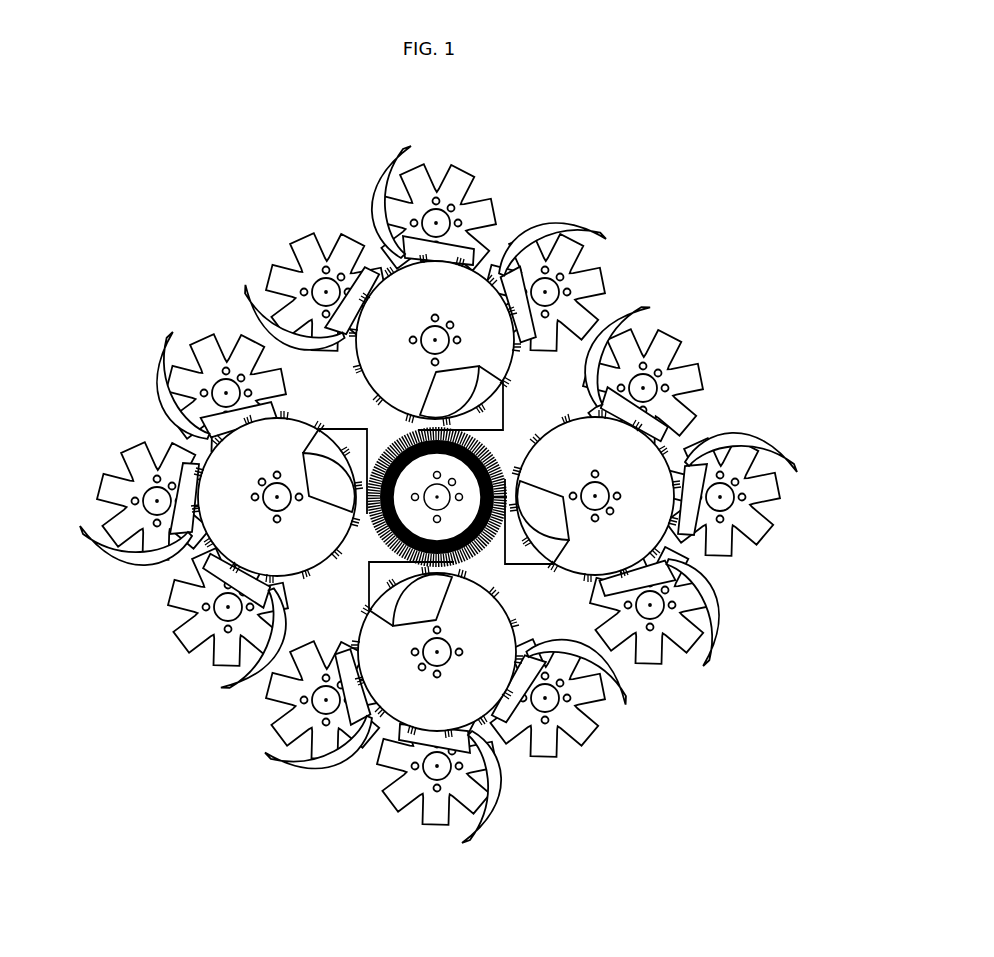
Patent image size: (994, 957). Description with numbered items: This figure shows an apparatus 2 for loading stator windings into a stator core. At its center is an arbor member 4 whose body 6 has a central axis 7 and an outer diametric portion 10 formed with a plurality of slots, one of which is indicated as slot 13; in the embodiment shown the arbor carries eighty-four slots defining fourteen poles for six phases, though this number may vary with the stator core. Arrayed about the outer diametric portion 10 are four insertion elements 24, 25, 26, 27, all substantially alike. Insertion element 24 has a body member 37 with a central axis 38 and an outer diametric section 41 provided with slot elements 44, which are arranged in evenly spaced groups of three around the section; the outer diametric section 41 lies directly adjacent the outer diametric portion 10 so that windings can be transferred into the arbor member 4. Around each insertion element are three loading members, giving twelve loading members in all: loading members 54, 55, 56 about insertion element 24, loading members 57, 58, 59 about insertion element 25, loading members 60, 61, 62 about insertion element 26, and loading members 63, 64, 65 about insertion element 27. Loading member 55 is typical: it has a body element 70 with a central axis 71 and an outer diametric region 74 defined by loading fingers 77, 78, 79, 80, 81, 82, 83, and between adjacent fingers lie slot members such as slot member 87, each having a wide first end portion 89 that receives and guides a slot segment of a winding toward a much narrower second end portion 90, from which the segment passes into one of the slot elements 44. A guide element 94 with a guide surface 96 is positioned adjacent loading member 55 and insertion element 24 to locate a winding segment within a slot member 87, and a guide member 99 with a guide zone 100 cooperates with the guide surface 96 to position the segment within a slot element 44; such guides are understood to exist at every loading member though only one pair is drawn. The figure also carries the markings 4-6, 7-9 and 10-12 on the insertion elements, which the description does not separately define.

The apparatus 2 is at (215, 155).
The arbor member 4 is at (490, 585).
The body 6 is at (385, 435).
The central axis 7 is at (446, 503).
The outer diametric portion 10 is at (370, 548).
The slot 13 is at (378, 585).
The insertion element 24 is at (435, 342).
The insertion element 25 is at (593, 496).
The insertion element 26 is at (437, 650).
The insertion element 27 is at (279, 497).
The body member 37 is at (545, 255).
The central axis 38 is at (430, 335).
The outer diametric section 41 is at (505, 380).
The slot elements 44 is at (437, 270).
The loading member 54 is at (290, 225).
The loading member 55 is at (500, 213).
The loading member 56 is at (620, 262).
The loading member 57 is at (710, 350).
The loading member 58 is at (738, 575).
The loading member 59 is at (665, 672).
The loading member 60 is at (600, 755).
The loading member 61 is at (380, 818).
The loading member 62 is at (260, 715).
The loading member 63 is at (170, 660).
The loading member 64 is at (110, 410).
The loading member 65 is at (200, 320).
The body element 70 is at (410, 165).
The central axis 71 is at (395, 205).
The outer diametric region 74 is at (462, 170).
The loading finger 77 is at (470, 195).
The loading finger 78 is at (505, 230).
The loading finger 79 is at (480, 248).
The loading finger 80 is at (385, 240).
The loading finger 81 is at (290, 300).
The loading finger 82 is at (405, 225).
The loading finger 83 is at (415, 185).
The slot member 87 is at (430, 165).
The first end portion 89 is at (445, 150).
The second end portion 90 is at (447, 208).
The guide element 94 is at (375, 178).
The guide surface 96 is at (375, 250).
The guide member 99 is at (490, 238).
The guide zone 100 is at (432, 275).
The elements 4-6 is at (267, 446).
The elements 7-9 is at (467, 626).
The elements 10-12 is at (430, 458).